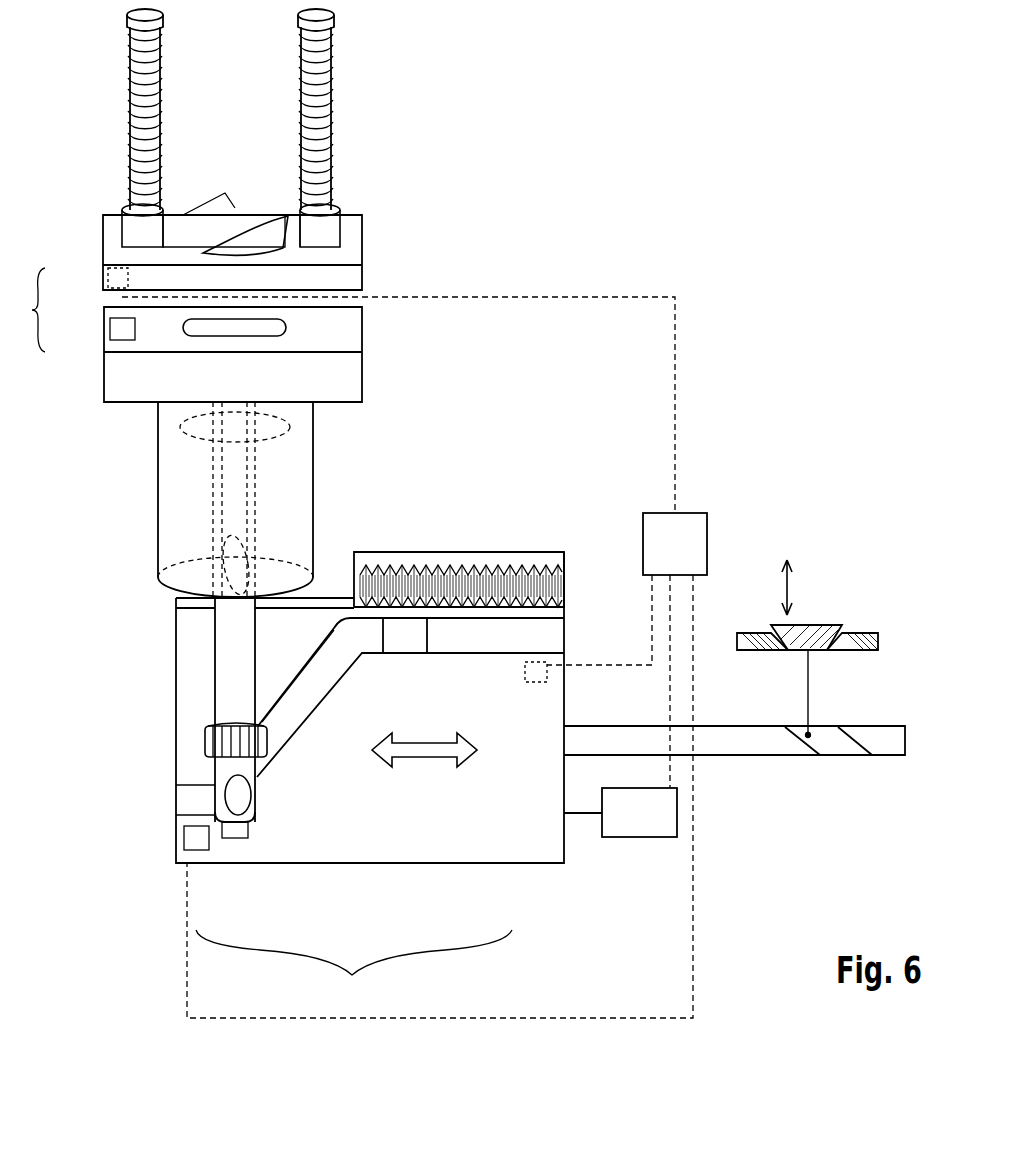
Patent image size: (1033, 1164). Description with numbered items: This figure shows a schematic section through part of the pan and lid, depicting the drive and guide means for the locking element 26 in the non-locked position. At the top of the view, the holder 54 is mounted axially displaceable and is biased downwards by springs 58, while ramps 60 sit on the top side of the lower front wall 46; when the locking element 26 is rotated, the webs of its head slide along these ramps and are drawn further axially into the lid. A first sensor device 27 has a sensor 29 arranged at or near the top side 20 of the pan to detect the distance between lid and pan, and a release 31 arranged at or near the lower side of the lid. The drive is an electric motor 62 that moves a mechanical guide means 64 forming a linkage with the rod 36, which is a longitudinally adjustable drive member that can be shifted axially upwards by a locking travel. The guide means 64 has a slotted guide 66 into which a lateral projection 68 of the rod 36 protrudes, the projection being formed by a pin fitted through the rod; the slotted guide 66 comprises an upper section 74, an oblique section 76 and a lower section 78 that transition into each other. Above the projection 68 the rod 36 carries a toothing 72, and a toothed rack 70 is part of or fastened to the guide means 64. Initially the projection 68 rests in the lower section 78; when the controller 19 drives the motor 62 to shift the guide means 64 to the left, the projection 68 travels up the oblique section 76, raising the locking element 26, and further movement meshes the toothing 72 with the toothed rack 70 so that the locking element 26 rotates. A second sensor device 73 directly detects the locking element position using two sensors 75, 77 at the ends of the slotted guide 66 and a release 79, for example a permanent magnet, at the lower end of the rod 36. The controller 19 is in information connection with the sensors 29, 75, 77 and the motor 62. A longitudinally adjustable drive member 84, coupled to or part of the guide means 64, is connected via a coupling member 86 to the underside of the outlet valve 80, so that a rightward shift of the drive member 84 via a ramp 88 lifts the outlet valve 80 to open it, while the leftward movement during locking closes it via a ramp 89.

The controller 19 is at (688, 537).
The top side 20 is at (345, 333).
The locking element 26 is at (240, 410).
The first sensor device 27 is at (25, 310).
The sensor 29 is at (110, 328).
The release 31 is at (108, 283).
The rod 36 is at (222, 672).
The lower front wall 46 is at (362, 245).
The holder 54 is at (140, 232).
The springs 58 is at (333, 72).
The ramps 60 is at (255, 238).
The electric motor 62 is at (638, 837).
The mechanical guide means 64 is at (545, 702).
The slotted guide 66 is at (552, 638).
The lateral projection 68 is at (255, 800).
The toothed rack 70 is at (515, 552).
The toothing 72 is at (205, 738).
The second sensor device 73 is at (354, 972).
The upper section 74 is at (466, 630).
The sensor 75 is at (196, 852).
The oblique section 76 is at (290, 724).
The sensor 77 is at (530, 682).
The lower section 78 is at (188, 798).
The release 79 is at (244, 840).
The outlet valve 80 is at (810, 625).
The longitudinally adjustable drive member 84 is at (710, 742).
The coupling member 86 is at (808, 728).
The ramp 88 is at (793, 735).
The ramp 89 is at (848, 737).